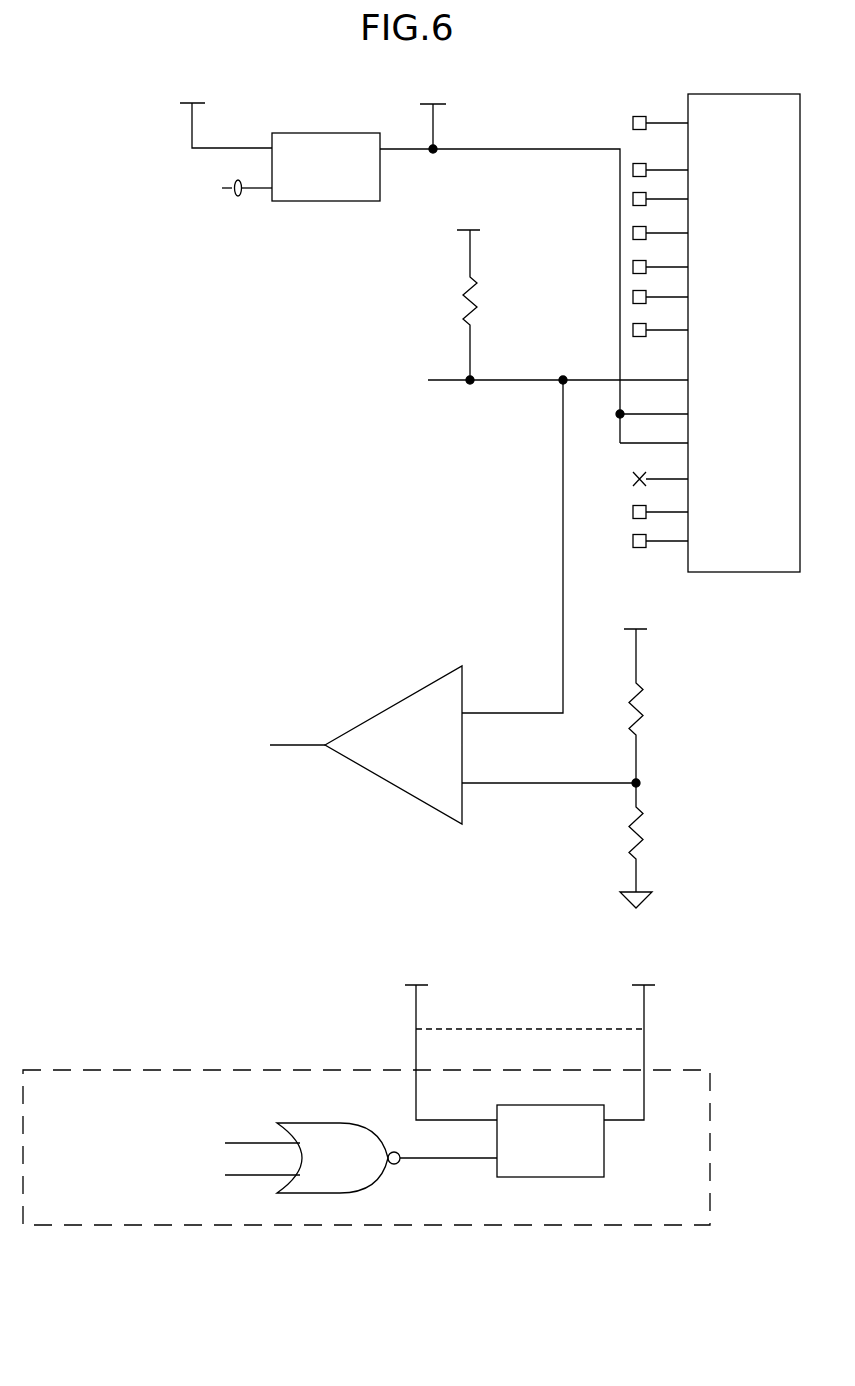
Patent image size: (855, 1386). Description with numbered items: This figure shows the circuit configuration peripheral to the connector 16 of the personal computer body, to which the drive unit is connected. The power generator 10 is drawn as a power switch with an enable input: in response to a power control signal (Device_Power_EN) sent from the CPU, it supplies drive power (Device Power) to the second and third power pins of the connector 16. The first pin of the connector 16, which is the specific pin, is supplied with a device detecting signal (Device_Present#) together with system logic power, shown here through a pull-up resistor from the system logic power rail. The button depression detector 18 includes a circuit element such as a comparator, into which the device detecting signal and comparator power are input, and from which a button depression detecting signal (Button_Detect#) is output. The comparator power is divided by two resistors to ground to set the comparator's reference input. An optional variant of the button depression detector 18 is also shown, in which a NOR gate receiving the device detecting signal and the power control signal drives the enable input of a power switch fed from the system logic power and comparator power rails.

The power generator 10 is at (411, 480).
The connector 16 is at (762, 93).
The button depression detector 18 is at (322, 973).